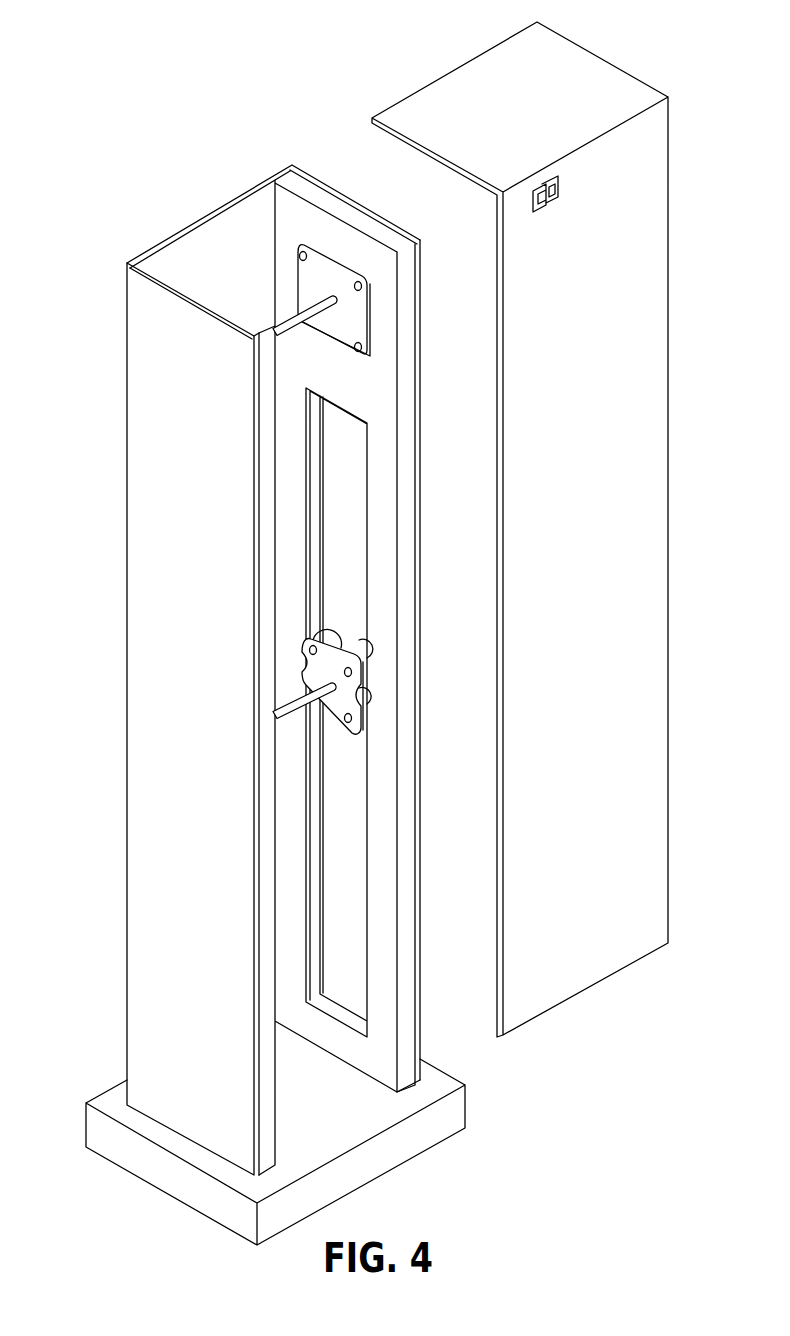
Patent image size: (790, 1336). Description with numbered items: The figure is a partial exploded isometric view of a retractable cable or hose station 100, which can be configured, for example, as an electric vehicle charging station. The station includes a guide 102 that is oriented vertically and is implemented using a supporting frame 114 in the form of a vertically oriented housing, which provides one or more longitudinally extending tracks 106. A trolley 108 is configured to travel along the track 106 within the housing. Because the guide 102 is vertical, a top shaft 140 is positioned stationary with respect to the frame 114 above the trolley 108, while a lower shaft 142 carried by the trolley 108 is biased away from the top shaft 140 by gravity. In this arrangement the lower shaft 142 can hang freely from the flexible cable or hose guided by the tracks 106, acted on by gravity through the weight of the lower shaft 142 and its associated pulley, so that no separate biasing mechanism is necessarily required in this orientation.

The retractable cable or hose station 100 is at (470, 0).
The guide 102 is at (267, 661).
The longitudinally extending track 106 is at (407, 663).
The trolley 108 is at (376, 639).
The supporting frame 114 is at (127, 663).
The top shaft 140 is at (287, 330).
The lower shaft 142 is at (290, 714).